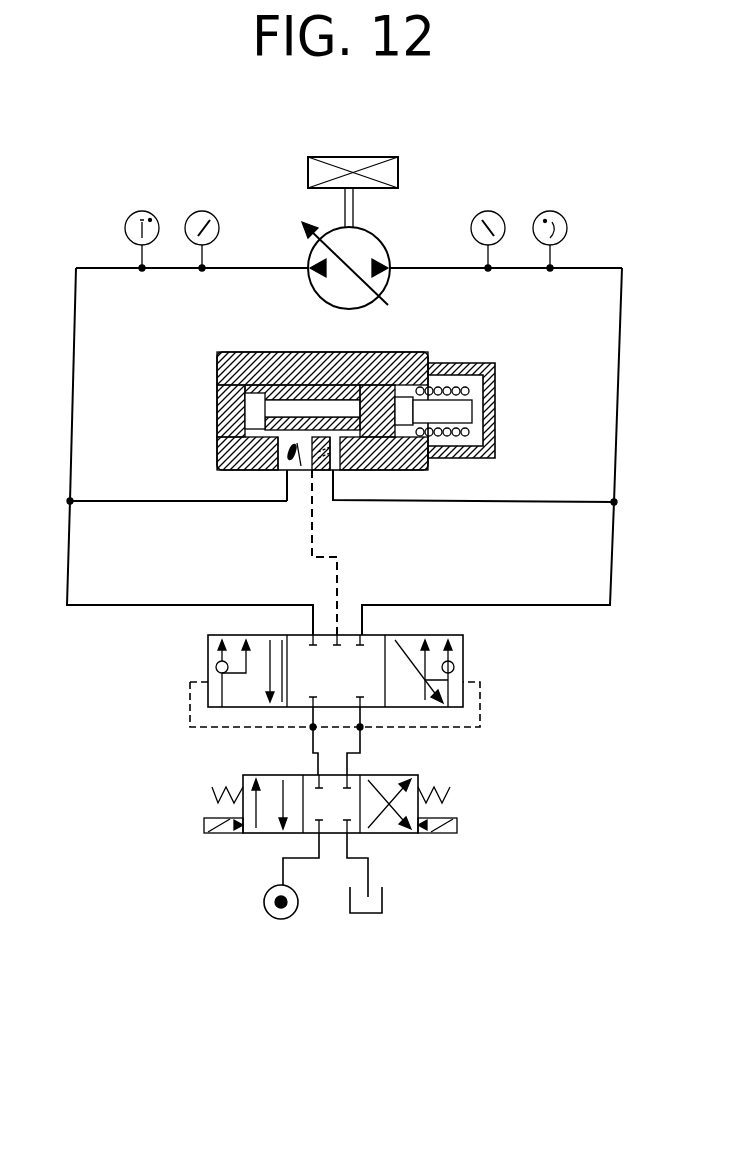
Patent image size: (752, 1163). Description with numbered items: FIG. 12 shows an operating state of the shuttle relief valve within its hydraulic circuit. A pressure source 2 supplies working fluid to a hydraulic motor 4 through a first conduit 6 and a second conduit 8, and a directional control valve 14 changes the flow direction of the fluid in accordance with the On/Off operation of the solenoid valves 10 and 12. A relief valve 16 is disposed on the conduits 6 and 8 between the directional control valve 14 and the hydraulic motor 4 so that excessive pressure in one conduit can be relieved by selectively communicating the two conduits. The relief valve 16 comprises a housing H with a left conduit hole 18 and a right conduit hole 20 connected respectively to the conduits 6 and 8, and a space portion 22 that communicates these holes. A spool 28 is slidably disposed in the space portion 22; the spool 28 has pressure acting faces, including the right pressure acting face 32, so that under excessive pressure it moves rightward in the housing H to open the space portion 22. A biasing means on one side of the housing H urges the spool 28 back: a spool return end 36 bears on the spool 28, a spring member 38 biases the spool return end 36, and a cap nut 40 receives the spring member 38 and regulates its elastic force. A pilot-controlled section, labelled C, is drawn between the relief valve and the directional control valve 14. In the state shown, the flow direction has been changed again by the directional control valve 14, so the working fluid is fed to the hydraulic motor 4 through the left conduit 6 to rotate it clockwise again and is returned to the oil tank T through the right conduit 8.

The pressure source 2 is at (276, 920).
The hydraulic motor 4 is at (358, 243).
The first conduit 6 is at (70, 440).
The second conduit 8 is at (615, 440).
The solenoid valve 10 is at (205, 826).
The solenoid valve 12 is at (460, 826).
The directional control valve 14 is at (240, 843).
The relief valve 16 is at (507, 365).
The left conduit hole 18 is at (278, 473).
The right conduit hole 20 is at (298, 473).
The space portion 22 is at (388, 352).
The spool 28 is at (357, 352).
The right pressure acting face 32 is at (288, 473).
The spool return end 36 is at (470, 365).
The spring member 38 is at (478, 415).
The cap nut 40 is at (493, 440).
The housing H is at (255, 352).
The pilot control valve C is at (203, 700).
The oil tank T is at (369, 917).